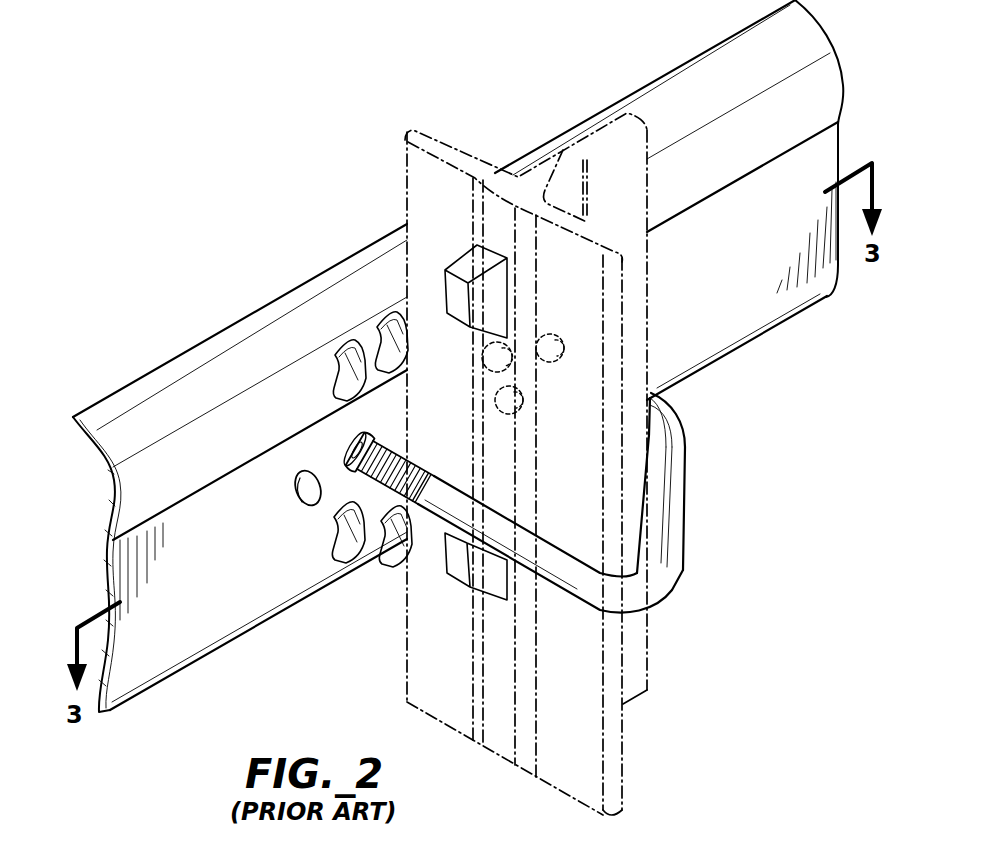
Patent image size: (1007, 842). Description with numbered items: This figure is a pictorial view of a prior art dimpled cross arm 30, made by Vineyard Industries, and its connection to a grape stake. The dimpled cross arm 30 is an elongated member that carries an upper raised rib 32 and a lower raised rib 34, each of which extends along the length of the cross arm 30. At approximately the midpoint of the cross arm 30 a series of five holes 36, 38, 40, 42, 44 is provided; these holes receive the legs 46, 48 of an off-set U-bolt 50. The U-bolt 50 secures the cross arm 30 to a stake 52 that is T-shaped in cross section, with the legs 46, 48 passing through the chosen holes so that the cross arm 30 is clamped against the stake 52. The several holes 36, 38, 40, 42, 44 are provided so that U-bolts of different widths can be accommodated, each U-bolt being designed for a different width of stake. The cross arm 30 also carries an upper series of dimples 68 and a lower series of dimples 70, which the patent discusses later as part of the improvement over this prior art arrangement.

The dimpled cross arm 30 is at (133, 291).
The upper raised rib 32 is at (137, 503).
The lower raised rib 34 is at (157, 660).
The hole 36 is at (293, 493).
The hole 38 is at (350, 457).
The hole 40 is at (487, 348).
The hole 42 is at (520, 383).
The hole 44 is at (552, 330).
The leg of U-bolt 46 is at (530, 547).
The leg of U-bolt 48 is at (657, 410).
The off-set U-bolt 50 is at (677, 527).
The stake 52 is at (620, 788).
The upper series of dimples 68 is at (385, 345).
The lower series of dimples 70 is at (362, 526).